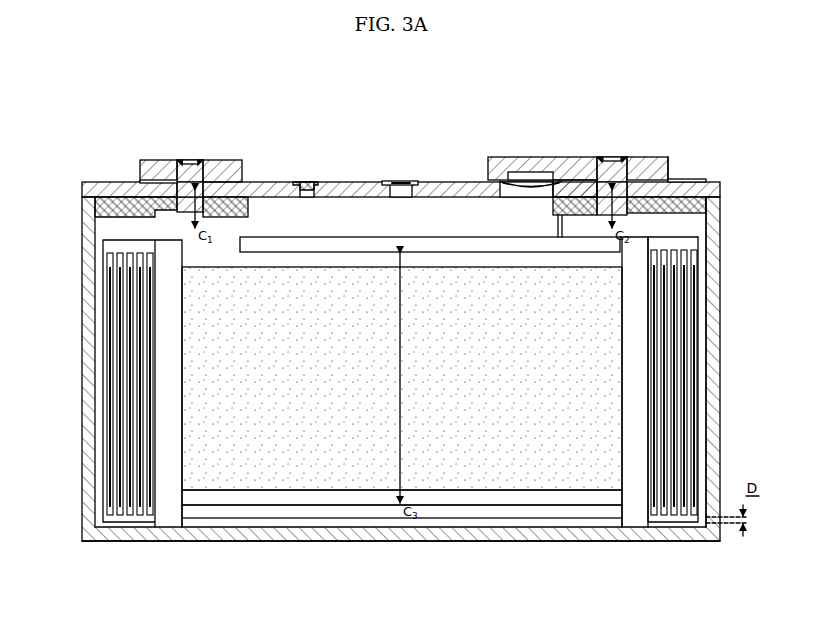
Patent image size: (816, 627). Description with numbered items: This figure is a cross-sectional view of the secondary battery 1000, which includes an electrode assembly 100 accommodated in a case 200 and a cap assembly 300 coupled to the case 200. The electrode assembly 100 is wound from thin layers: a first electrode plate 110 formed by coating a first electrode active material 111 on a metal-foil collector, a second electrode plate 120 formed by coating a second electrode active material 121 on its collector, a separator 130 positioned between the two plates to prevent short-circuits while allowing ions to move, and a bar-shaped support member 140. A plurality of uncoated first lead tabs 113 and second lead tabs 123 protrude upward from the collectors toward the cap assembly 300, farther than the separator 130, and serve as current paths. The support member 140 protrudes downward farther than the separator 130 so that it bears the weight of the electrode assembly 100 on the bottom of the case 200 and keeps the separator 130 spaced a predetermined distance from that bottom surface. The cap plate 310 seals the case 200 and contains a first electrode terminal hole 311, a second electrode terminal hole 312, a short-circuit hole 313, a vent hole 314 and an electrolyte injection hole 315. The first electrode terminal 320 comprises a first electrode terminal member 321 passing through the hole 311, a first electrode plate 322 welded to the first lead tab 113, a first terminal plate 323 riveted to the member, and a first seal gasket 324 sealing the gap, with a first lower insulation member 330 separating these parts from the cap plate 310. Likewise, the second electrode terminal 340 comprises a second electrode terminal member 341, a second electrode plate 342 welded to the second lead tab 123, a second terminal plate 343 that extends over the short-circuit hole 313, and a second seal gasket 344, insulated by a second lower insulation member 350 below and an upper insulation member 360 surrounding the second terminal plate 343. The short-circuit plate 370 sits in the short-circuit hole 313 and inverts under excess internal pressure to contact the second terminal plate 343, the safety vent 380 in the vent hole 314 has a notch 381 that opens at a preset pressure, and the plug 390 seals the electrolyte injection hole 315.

The secondary battery 1000 is at (50, 83).
The electrode assembly 100 is at (704, 362).
The first electrode plate 110 is at (457, 492).
The first electrode active material 111 is at (372, 505).
The first lead tabs 113 is at (163, 229).
The second electrode plate 120 is at (690, 516).
The second electrode active material 121 is at (710, 545).
The second lead tabs 123 is at (640, 234).
The separator 130 is at (540, 505).
The support member 140 is at (634, 516).
The case 200 is at (335, 541).
The cap assembly 300 is at (671, 138).
The cap plate 310 is at (105, 183).
The first electrode terminal hole 311 is at (215, 214).
The second electrode terminal hole 312 is at (560, 212).
The short-circuit hole 313 is at (515, 198).
The vent hole 314 is at (400, 198).
The electrolyte injection hole 315 is at (307, 198).
The first electrode terminal 320 is at (168, 148).
The first electrode terminal member 321 is at (194, 159).
The first electrode plate 322 is at (232, 159).
The first terminal plate 323 is at (157, 159).
The first seal gasket 324 is at (138, 178).
The first lower insulation member 330 is at (97, 203).
The second electrode terminal 340 is at (578, 148).
The second electrode terminal member 341 is at (610, 157).
The second electrode plate 342 is at (570, 157).
The second terminal plate 343 is at (647, 147).
The second seal gasket 344 is at (705, 180).
The second lower insulation member 350 is at (706, 201).
The upper insulation member 360 is at (668, 157).
The short-circuit plate 370 is at (522, 157).
The safety vent 380 is at (415, 183).
The notch 381 is at (400, 180).
The plug 390 is at (305, 181).